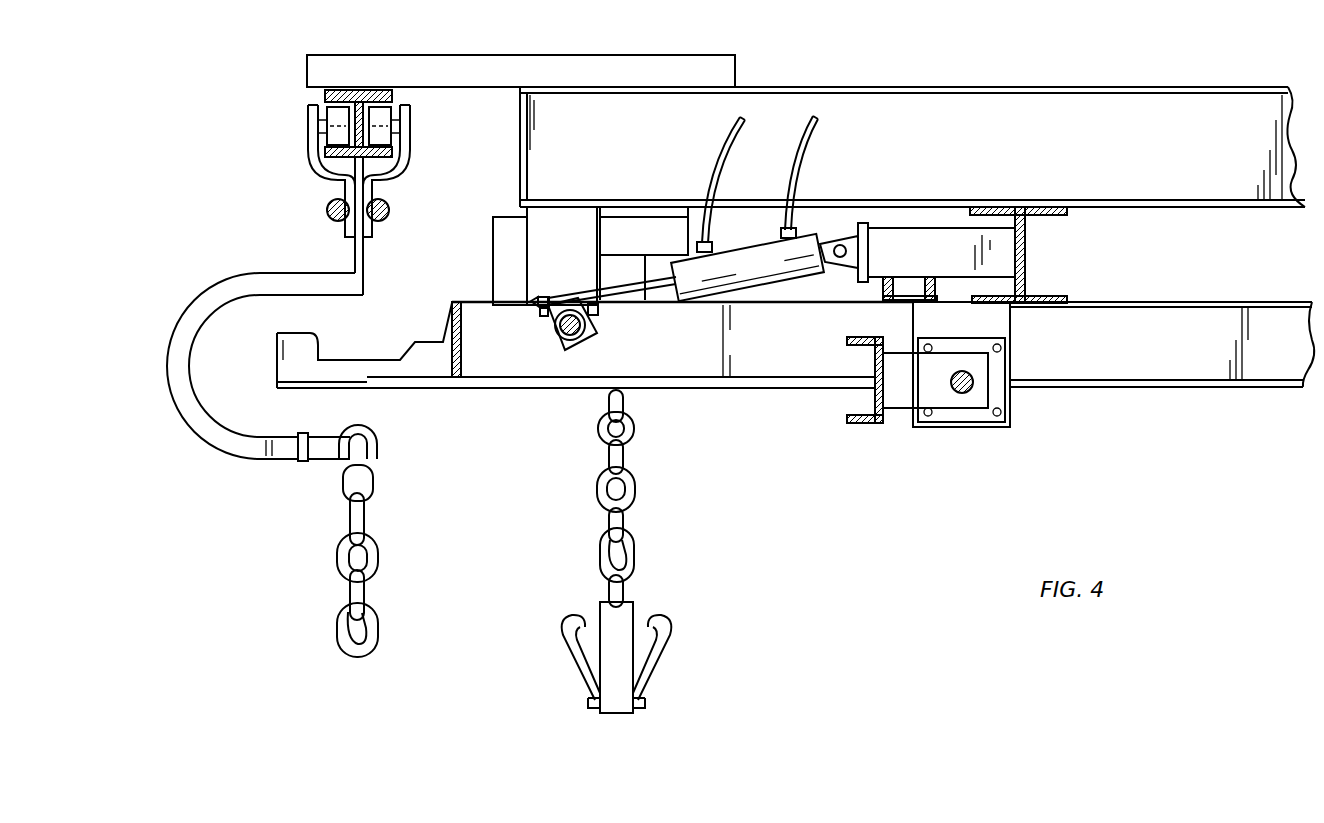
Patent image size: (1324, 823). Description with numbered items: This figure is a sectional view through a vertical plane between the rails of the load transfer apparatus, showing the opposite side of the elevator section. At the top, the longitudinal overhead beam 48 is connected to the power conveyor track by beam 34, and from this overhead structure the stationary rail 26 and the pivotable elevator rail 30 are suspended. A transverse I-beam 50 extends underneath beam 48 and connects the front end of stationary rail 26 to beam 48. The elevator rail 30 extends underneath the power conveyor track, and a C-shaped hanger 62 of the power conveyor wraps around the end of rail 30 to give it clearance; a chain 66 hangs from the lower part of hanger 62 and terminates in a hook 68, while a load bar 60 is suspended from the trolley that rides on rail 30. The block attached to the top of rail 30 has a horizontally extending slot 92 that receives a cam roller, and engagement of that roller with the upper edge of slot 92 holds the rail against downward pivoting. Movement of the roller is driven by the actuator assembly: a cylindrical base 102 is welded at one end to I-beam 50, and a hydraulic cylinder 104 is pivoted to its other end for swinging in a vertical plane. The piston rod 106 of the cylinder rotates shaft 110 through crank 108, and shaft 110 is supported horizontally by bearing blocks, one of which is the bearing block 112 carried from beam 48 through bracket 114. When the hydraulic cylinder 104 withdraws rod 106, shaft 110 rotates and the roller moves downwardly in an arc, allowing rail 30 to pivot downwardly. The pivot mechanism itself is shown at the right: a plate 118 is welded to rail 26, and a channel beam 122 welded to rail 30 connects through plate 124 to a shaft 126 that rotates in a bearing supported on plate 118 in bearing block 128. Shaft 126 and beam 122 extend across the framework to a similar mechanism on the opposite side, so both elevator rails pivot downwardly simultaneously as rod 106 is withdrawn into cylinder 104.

The stationary rail 26 is at (1205, 400).
The elevator rail 30 is at (701, 396).
The beam 34 is at (453, 58).
The longitudinal overhead beam 48 is at (1078, 38).
The I-beam 50 is at (1028, 258).
The load bar 60 is at (620, 612).
The C-shaped hanger 62 is at (192, 428).
The chain 66 is at (362, 520).
The hook 68 is at (366, 636).
The horizontally extending slot 92 is at (626, 266).
The cylindrical base 102 is at (932, 240).
The hydraulic cylinder 104 is at (757, 268).
The piston rod 106 is at (662, 276).
The crank 108 is at (547, 323).
The shaft 110 is at (560, 333).
The bearing block 112 is at (598, 318).
The bracket 114 is at (572, 222).
The plate 118 is at (1002, 428).
The channel beam 122 is at (858, 425).
The plate 124 is at (905, 410).
The shaft 126 is at (970, 386).
The bearing block 128 is at (972, 423).